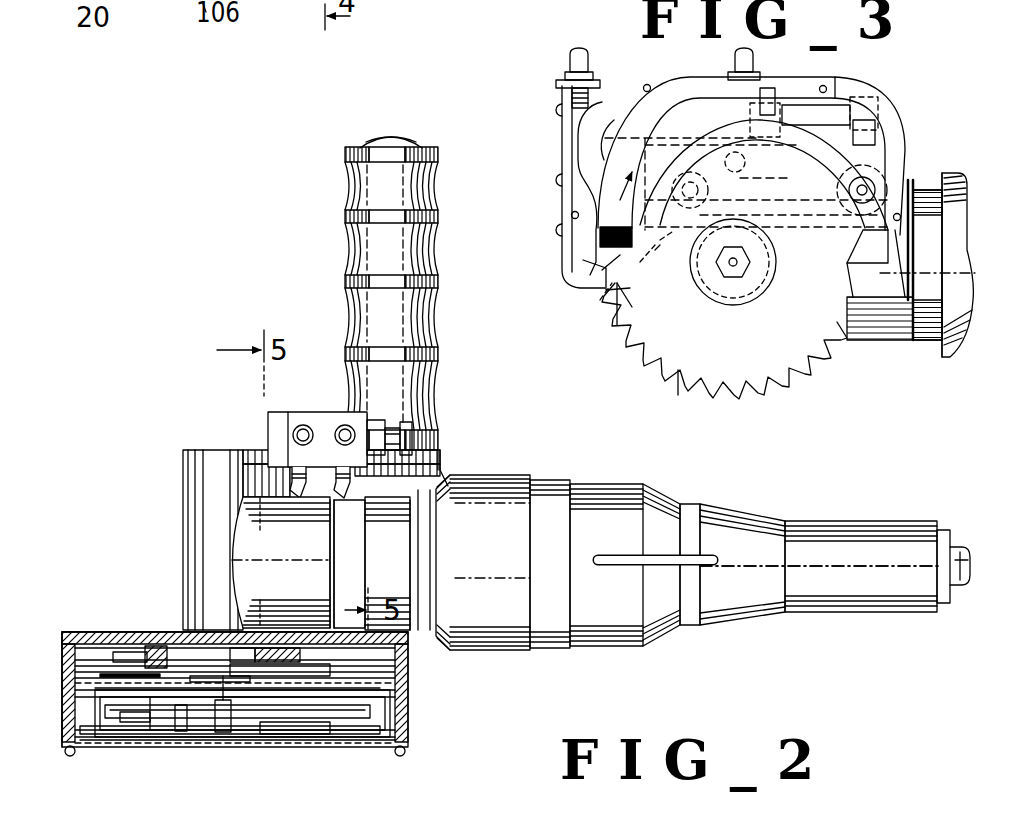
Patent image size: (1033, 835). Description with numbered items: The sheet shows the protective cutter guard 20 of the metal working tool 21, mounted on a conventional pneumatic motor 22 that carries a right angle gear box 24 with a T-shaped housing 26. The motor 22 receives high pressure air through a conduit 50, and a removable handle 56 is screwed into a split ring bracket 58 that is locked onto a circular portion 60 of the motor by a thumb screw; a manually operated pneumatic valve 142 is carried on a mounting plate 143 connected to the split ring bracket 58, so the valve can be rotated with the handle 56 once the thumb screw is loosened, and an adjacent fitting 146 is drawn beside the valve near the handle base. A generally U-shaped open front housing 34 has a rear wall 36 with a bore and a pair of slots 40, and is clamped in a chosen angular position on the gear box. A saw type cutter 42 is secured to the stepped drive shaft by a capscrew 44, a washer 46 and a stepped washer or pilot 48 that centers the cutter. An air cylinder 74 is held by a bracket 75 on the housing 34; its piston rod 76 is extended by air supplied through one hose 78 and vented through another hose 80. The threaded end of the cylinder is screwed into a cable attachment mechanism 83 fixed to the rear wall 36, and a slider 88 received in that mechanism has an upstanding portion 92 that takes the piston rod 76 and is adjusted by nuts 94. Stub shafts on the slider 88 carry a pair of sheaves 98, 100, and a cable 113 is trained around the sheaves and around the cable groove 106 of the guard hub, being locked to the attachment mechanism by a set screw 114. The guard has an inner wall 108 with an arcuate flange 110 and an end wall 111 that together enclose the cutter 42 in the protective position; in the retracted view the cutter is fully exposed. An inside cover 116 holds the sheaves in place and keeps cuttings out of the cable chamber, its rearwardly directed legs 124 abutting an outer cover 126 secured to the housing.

In FIG. 2, the protective cutter guard 20 is at (332, 748).
In FIG. 3, the protective cutter guard 20 is at (612, 165).
In FIG. 2, the metal working tool 21 is at (748, 492).
In FIG. 3, the metal working tool 21 is at (645, 350).
In FIG. 2, the motor 22 is at (620, 557).
In FIG. 3, the motor 22 is at (955, 356).
In FIG. 2, the right angle gear box 24 is at (206, 455).
In FIG. 2, the T-shaped housing 26 is at (222, 545).
In FIG. 2, the U-shaped open front housing 34 is at (96, 627).
In FIG. 3, the U-shaped open front housing 34 is at (884, 94).
In FIG. 2, the rear wall 36 is at (101, 626).
In FIG. 3, the rear wall 36 is at (580, 286).
In FIG. 3, the slots 40 is at (732, 279).
In FIG. 2, the saw type cutter 42 is at (385, 712).
In FIG. 3, the saw type cutter 42 is at (822, 350).
In FIG. 2, the capscrew 44 is at (227, 745).
In FIG. 3, the capscrew 44 is at (750, 345).
In FIG. 2, the washer 46 is at (186, 738).
In FIG. 3, the washer 46 is at (776, 292).
In FIG. 2, the stepped washer or pilot 48 is at (166, 740).
In FIG. 2, the conduit 50 is at (952, 595).
In FIG. 2, the removable handle 56 is at (345, 248).
In FIG. 2, the split ring bracket 58 is at (404, 559).
In FIG. 2, the circular portion 60 is at (432, 548).
In FIG. 3, the air cylinder 74 is at (682, 108).
In FIG. 3, the bracket 75 is at (562, 86).
In FIG. 3, the piston rod 76 is at (800, 110).
In FIG. 3, the hose 78 is at (568, 63).
In FIG. 3, the hose 80 is at (732, 55).
In FIG. 2, the cable attachment mechanism 83 is at (192, 640).
In FIG. 3, the cable attachment mechanism 83 is at (766, 100).
In FIG. 3, the slider 88 is at (872, 122).
In FIG. 3, the upstanding portion 92 is at (866, 150).
In FIG. 3, the nuts 94 is at (850, 85).
In FIG. 2, the sheave 98 is at (125, 650).
In FIG. 3, the sheave 98 is at (600, 253).
In FIG. 2, the sheave 100 is at (380, 666).
In FIG. 3, the sheave 100 is at (880, 188).
In FIG. 3, the cable groove 106 is at (680, 392).
In FIG. 2, the inner wall 108 is at (380, 690).
In FIG. 2, the arcuate flange 110 is at (302, 742).
In FIG. 2, the end wall 111 is at (385, 733).
In FIG. 2, the cable 113 is at (280, 625).
In FIG. 3, the cable 113 is at (660, 271).
In FIG. 2, the set screw 114 is at (232, 640).
In FIG. 3, the inside cover 116 is at (612, 128).
In FIG. 2, the legs 124 is at (68, 757).
In FIG. 2, the outer cover 126 is at (108, 750).
In FIG. 2, the pneumatic valve 142 is at (278, 420).
In FIG. 2, the mounting plate 143 is at (418, 456).
In FIG. 2, the cable connector 146 is at (415, 428).